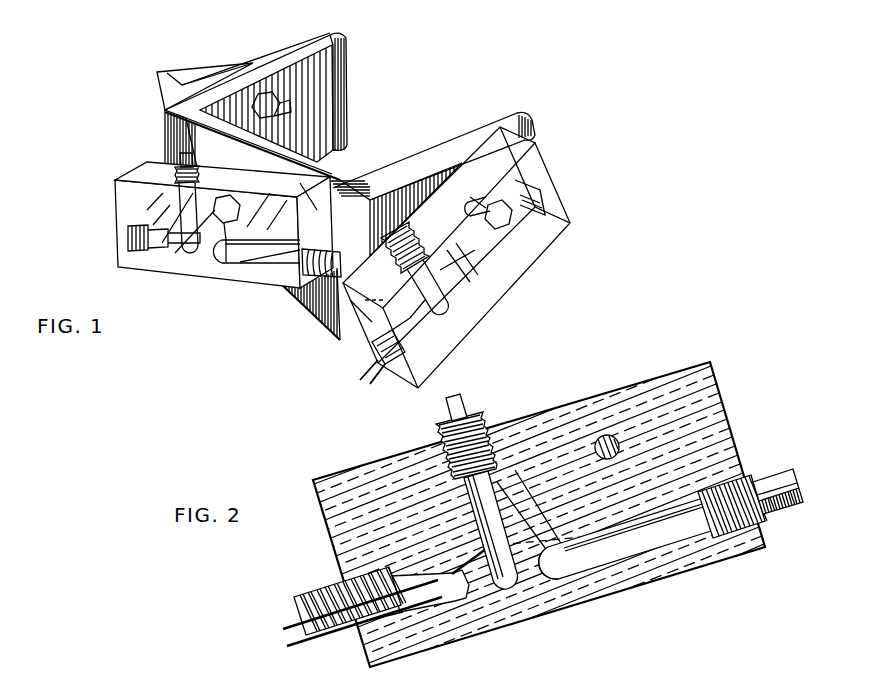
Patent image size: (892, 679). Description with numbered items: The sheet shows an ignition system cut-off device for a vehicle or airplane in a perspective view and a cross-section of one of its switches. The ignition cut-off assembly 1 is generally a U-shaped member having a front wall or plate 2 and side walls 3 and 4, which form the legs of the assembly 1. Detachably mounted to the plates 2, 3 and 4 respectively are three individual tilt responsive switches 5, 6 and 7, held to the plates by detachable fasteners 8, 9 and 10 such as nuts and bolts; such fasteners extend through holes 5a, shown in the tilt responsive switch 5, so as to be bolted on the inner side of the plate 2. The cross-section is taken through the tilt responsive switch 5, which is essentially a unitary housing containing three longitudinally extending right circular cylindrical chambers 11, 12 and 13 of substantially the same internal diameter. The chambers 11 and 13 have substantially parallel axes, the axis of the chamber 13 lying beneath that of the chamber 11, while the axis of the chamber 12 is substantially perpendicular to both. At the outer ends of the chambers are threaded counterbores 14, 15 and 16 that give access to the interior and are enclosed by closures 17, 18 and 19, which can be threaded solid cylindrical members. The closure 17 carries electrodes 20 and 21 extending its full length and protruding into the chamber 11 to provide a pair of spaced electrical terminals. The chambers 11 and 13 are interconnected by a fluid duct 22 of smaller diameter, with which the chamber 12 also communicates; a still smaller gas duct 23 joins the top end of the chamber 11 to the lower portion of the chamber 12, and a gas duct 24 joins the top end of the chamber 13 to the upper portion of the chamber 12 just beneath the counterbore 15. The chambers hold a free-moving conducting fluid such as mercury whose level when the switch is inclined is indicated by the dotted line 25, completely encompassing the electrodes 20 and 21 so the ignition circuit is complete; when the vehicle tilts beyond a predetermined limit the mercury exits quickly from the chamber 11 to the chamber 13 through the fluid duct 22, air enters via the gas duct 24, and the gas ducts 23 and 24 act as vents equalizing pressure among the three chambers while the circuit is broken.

In FIG. 1, the ignition cut-off assembly 1 is at (538, 122).
In FIG. 1, the front wall or plate 2 is at (110, 136).
In FIG. 1, the side wall 3 is at (473, 132).
In FIG. 1, the side wall 4 is at (323, 90).
In FIG. 1, the tilt responsive switch 5 is at (176, 277).
In FIG. 2, the tilt responsive switch 5 is at (725, 372).
In FIG. 2, the hole 5a is at (610, 445).
In FIG. 1, the tilt responsive switch 6 is at (570, 220).
In FIG. 1, the tilt responsive switch 7 is at (203, 62).
In FIG. 1, the detachable fastener 8 is at (223, 224).
In FIG. 2, the detachable fastener 8 is at (600, 437).
In FIG. 1, the detachable fastener 9 is at (508, 215).
In FIG. 1, the detachable fastener 10 is at (270, 98).
In FIG. 2, the chamber 11 is at (456, 596).
In FIG. 2, the chamber 12 is at (497, 497).
In FIG. 2, the chamber 13 is at (684, 524).
In FIG. 2, the counterbore 14 is at (380, 640).
In FIG. 2, the counterbore 15 is at (497, 430).
In FIG. 2, the counterbore 16 is at (745, 475).
In FIG. 2, the closure 17 is at (325, 600).
In FIG. 2, the closure 18 is at (440, 421).
In FIG. 2, the closure 19 is at (780, 512).
In FIG. 2, the electrode 20 is at (300, 625).
In FIG. 2, the electrode 21 is at (300, 645).
In FIG. 2, the fluid duct 22 is at (537, 575).
In FIG. 2, the gas duct 23 is at (497, 580).
In FIG. 2, the gas duct 24 is at (520, 505).
In FIG. 2, the dotted line 25 is at (625, 545).